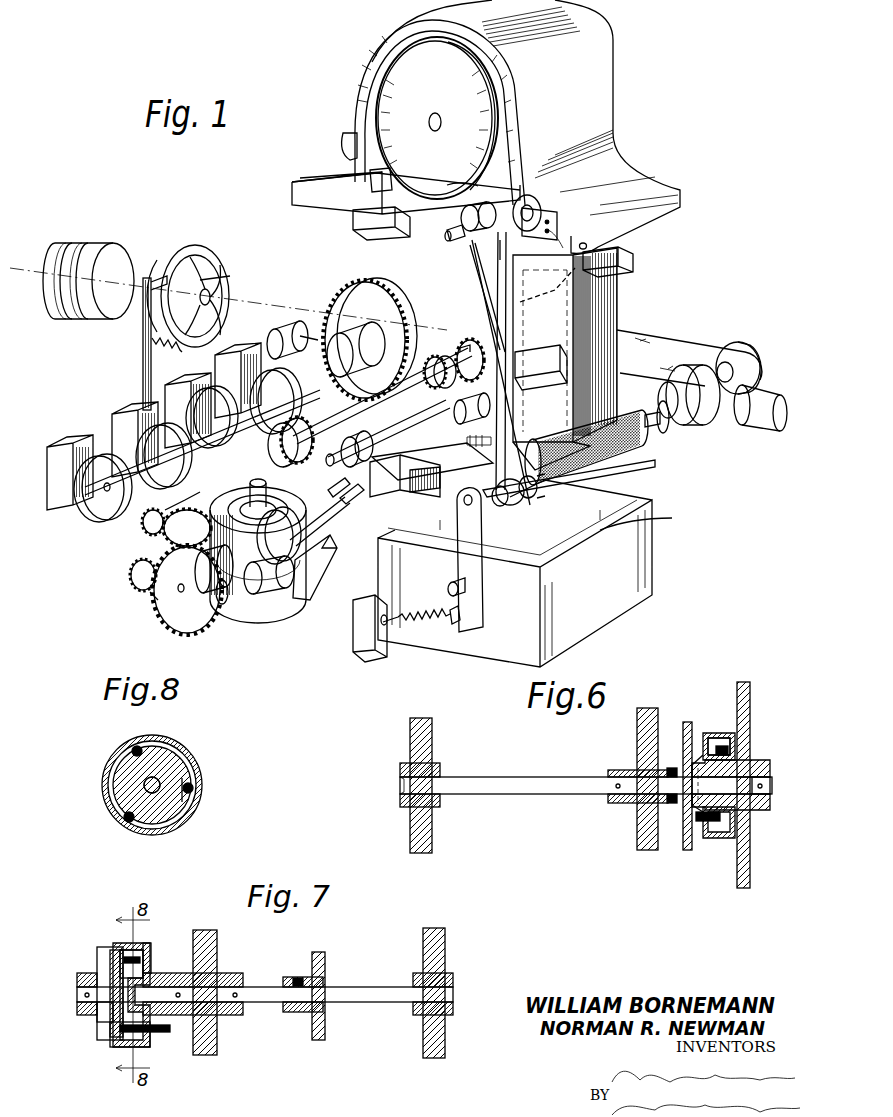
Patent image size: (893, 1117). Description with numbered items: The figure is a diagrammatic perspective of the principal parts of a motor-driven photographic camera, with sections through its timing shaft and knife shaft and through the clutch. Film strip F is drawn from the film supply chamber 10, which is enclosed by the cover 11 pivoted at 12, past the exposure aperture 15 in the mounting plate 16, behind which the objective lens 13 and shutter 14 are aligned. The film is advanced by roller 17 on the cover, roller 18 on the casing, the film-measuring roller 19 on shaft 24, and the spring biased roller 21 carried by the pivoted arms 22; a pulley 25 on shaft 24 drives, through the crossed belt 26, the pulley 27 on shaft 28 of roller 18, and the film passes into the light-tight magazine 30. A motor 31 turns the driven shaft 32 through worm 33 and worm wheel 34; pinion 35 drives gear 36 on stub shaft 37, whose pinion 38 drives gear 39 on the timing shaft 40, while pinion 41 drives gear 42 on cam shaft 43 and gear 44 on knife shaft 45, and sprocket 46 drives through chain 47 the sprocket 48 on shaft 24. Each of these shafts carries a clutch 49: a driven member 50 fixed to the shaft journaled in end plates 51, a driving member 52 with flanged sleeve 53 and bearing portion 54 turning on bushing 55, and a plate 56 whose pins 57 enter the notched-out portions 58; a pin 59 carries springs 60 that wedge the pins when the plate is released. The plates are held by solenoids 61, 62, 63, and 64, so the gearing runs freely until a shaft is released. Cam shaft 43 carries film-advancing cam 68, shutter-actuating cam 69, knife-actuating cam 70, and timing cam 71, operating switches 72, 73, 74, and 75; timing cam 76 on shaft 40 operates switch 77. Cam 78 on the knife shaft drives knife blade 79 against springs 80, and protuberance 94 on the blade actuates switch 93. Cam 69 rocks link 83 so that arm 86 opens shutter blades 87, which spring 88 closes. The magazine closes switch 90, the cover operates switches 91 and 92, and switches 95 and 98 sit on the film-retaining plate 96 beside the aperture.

In FIG. 1, the film supply chamber 10 is at (412, 30).
In FIG. 1, the cover 11 is at (598, 58).
In FIG. 1, the pivot 12 is at (618, 232).
In FIG. 1, the objective lens 13 is at (112, 256).
In FIG. 1, the shutter 14 is at (200, 248).
In FIG. 1, the exposure aperture 15 is at (548, 292).
In FIG. 1, the mounting plate 16 is at (510, 258).
In FIG. 1, the roller 17 is at (533, 195).
In FIG. 1, the roller 18 is at (452, 192).
In FIG. 1, the film-measuring roller 19 is at (625, 478).
In FIG. 1, the spring biased roller 21 is at (457, 548).
In FIG. 1, the arms 22 is at (458, 578).
In FIG. 1, the shaft 24 is at (648, 428).
In FIG. 1, the pulley 25 is at (525, 505).
In FIG. 1, the crossed belt 26 is at (504, 299).
In FIG. 1, the pulley 27 is at (462, 220).
In FIG. 1, the shaft 28 is at (450, 240).
In FIG. 1, the magazine 30 is at (640, 565).
In FIG. 1, the motor 31 is at (264, 604).
In FIG. 1, the driven shaft 32 is at (145, 520).
In FIG. 1, the worm 33 is at (352, 380).
In FIG. 1, the worm wheel 34 is at (300, 412).
In FIG. 1, the pinion 35 is at (150, 535).
In FIG. 1, the gear 36 is at (168, 535).
In FIG. 1, the stub shaft 37 is at (138, 592).
In FIG. 1, the pinion 38 is at (160, 608).
In FIG. 1, the gear 39 is at (180, 618).
In FIG. 6, the gear 39 is at (750, 712).
In FIG. 1, the timing shaft 40 is at (335, 506).
In FIG. 6, the timing shaft 40 is at (540, 786).
In FIG. 1, the pinion 41 is at (440, 355).
In FIG. 1, the gear 42 is at (380, 304).
In FIG. 1, the cam shaft 43 is at (118, 452).
In FIG. 1, the gear 44 is at (468, 338).
In FIG. 7, the gear 44 is at (100, 955).
In FIG. 1, the knife shaft 45 is at (385, 435).
In FIG. 8, the knife shaft 45 is at (145, 786).
In FIG. 7, the knife shaft 45 is at (384, 1002).
In FIG. 1, the sprocket or pulley 46 is at (478, 280).
In FIG. 1, the chain or belt 47 is at (680, 338).
In FIG. 1, the sprocket or pulley 48 is at (750, 360).
In FIG. 1, the clutch 49 is at (684, 418).
In FIG. 8, the driven member 50 is at (178, 765).
In FIG. 6, the driven member 50 is at (695, 728).
In FIG. 7, the driven member 50 is at (148, 965).
In FIG. 6, the end plates 51 is at (436, 748).
In FIG. 7, the end plates 51 is at (215, 950).
In FIG. 6, the driving member 52 is at (725, 840).
In FIG. 7, the driving member 52 is at (112, 1040).
In FIG. 8, the flanged sleeve 53 is at (178, 826).
In FIG. 6, the flanged sleeve 53 is at (730, 730).
In FIG. 7, the flanged sleeve 53 is at (122, 1045).
In FIG. 6, the bearing portion 54 is at (755, 810).
In FIG. 7, the bearing portion 54 is at (98, 1020).
In FIG. 6, the bushing 55 is at (758, 760).
In FIG. 7, the bushing 55 is at (78, 978).
In FIG. 1, the plate 56 is at (705, 430).
In FIG. 6, the plate 56 is at (703, 760).
In FIG. 7, the plate 56 is at (150, 955).
In FIG. 8, the pins 57 is at (130, 748).
In FIG. 6, the pins 57 is at (720, 740).
In FIG. 7, the pins 57 is at (127, 955).
In FIG. 8, the notched-out portions 58 is at (200, 806).
In FIG. 6, the pin 59 is at (705, 825).
In FIG. 7, the pin 59 is at (168, 1034).
In FIG. 8, the springs 60 is at (130, 825).
In FIG. 1, the solenoid 61 is at (755, 418).
In FIG. 1, the solenoid 62 is at (282, 598).
In FIG. 1, the solenoid 63 is at (283, 332).
In FIG. 1, the solenoid 64 is at (470, 422).
In FIG. 1, the film-advancing cam 68 is at (266, 372).
In FIG. 1, the shutter-actuating cam 69 is at (215, 395).
In FIG. 1, the knife-actuating cam 70 is at (148, 398).
In FIG. 1, the timing cam 71 is at (100, 518).
In FIG. 1, the switch 72 is at (240, 356).
In FIG. 1, the switch 73 is at (188, 386).
In FIG. 1, the switch 74 is at (128, 412).
In FIG. 1, the switch 75 is at (62, 444).
In FIG. 1, the timing cam 76 is at (300, 535).
In FIG. 6, the timing cam 76 is at (685, 845).
In FIG. 1, the switch 77 is at (312, 584).
In FIG. 1, the cam 78 is at (353, 455).
In FIG. 7, the cam 78 is at (318, 1040).
In FIG. 1, the knife blade 79 is at (486, 560).
In FIG. 1, the springs 80 is at (412, 495).
In FIG. 1, the link 83 is at (140, 350).
In FIG. 1, the arm 86 is at (156, 270).
In FIG. 1, the shutter blades 87 is at (225, 275).
In FIG. 1, the spring 88 is at (150, 340).
In FIG. 1, the switch 90 is at (368, 655).
In FIG. 1, the switch 91 is at (365, 222).
In FIG. 1, the switch 92 is at (360, 168).
In FIG. 1, the switch 93 is at (385, 505).
In FIG. 1, the protuberance 94 is at (370, 498).
In FIG. 1, the switch 95 is at (635, 262).
In FIG. 1, the film-retaining plate 96 is at (615, 302).
In FIG. 1, the switch 98 is at (530, 365).
In FIG. 1, the film strip F is at (380, 92).